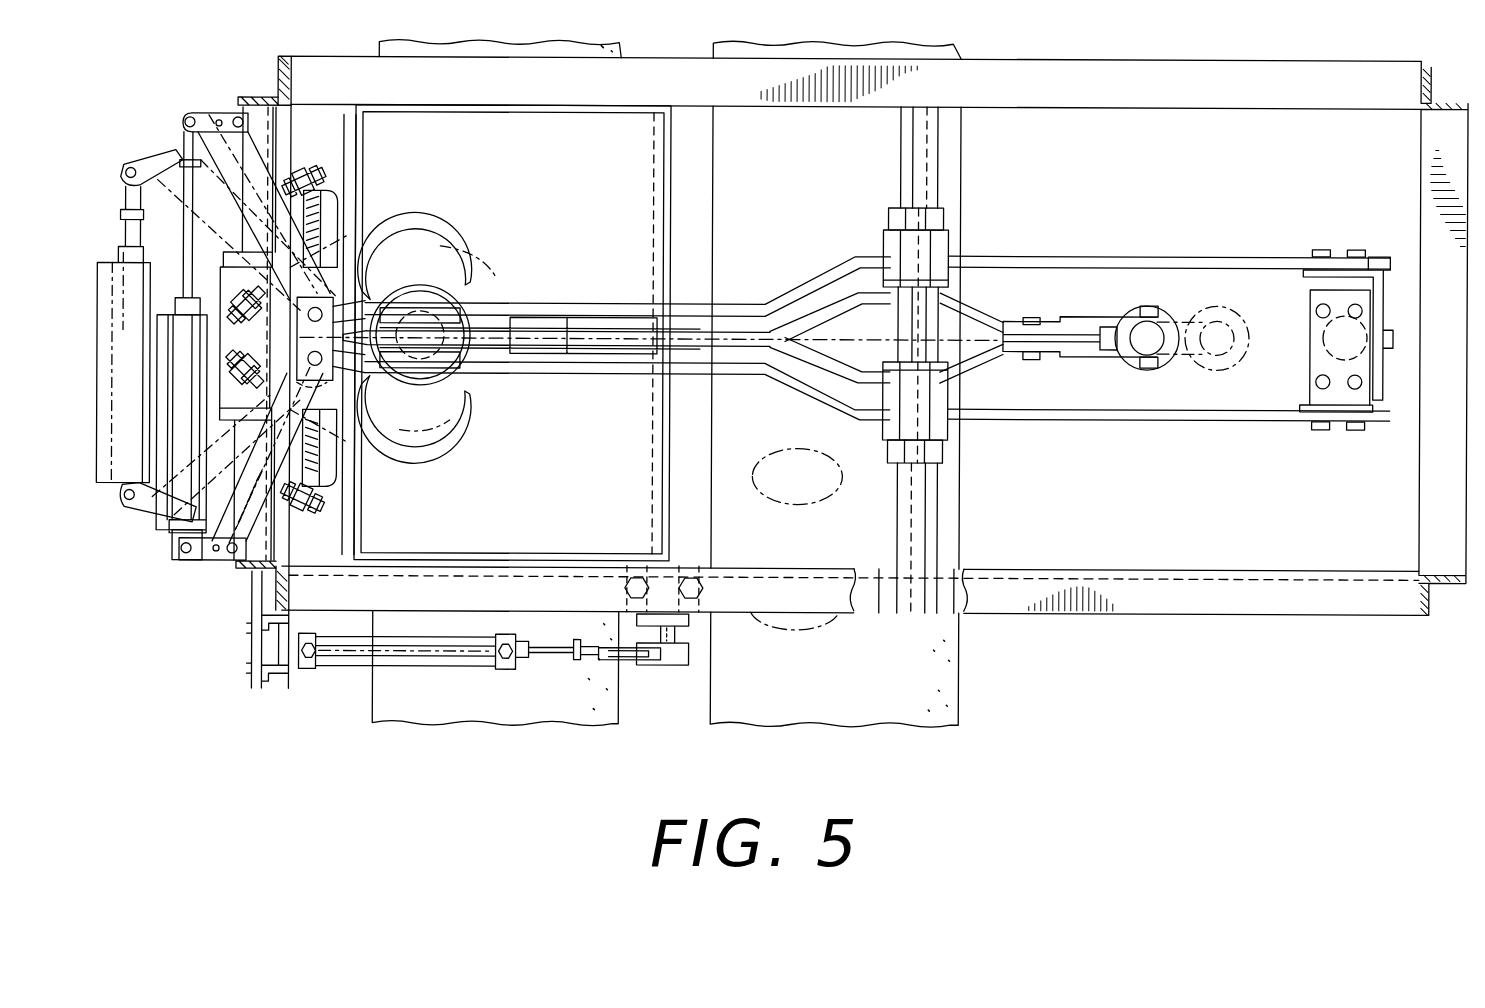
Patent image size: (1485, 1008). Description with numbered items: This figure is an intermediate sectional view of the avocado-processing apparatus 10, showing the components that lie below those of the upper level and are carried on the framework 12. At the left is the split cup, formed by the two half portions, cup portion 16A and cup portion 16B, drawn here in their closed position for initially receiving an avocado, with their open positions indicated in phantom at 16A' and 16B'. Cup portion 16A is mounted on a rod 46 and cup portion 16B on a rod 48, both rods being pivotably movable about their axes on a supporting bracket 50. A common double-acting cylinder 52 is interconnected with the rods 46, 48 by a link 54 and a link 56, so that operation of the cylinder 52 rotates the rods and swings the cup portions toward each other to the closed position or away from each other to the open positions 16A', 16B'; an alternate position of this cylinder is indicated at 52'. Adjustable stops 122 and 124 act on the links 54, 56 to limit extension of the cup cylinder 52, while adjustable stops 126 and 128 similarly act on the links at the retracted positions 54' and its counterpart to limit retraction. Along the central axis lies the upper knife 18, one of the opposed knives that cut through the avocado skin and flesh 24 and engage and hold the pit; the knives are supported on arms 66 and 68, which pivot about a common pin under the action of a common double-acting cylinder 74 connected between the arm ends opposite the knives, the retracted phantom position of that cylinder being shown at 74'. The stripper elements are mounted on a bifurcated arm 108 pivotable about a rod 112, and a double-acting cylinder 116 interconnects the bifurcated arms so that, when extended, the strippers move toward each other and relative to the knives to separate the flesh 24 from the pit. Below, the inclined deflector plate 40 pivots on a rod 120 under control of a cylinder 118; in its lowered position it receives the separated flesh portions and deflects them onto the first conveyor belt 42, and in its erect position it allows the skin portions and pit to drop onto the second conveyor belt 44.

The apparatus 10 is at (1165, 625).
The framework 12 is at (1333, 612).
The cup portion 16A is at (450, 256).
The open position of cup portion 16A' is at (483, 235).
The cup portion 16B is at (447, 420).
The open position of cup portion 16B' is at (447, 446).
The upper knife 18 is at (485, 354).
The avocado flesh 24 is at (840, 505).
The deflector plate 40 is at (488, 544).
The conveyor belt 42 is at (782, 728).
The second conveyor belt 44 is at (462, 730).
The rod 46 is at (345, 301).
The rod 48 is at (345, 412).
The supporting bracket 50 is at (315, 297).
The double-acting cylinder 52 is at (159, 564).
The lower link alternate position 52' is at (188, 464).
The link 54 is at (256, 206).
The retracted position of link 54' is at (224, 220).
The link 56 is at (260, 538).
The arm 66 is at (830, 370).
The arm 68 is at (830, 300).
The double-acting cylinder 74 is at (1091, 323).
The retracted position of cylinder 74' is at (1215, 324).
The bifurcated arm 108 is at (612, 304).
The rod 112 is at (935, 548).
The double-acting cylinder 116 is at (1315, 348).
The cylinder 118 is at (437, 673).
The rod 120 is at (690, 635).
The adjustable stop 122 is at (345, 176).
The adjustable stop 124 is at (345, 485).
The adjustable stop 126 is at (200, 295).
The adjustable stop 128 is at (200, 368).